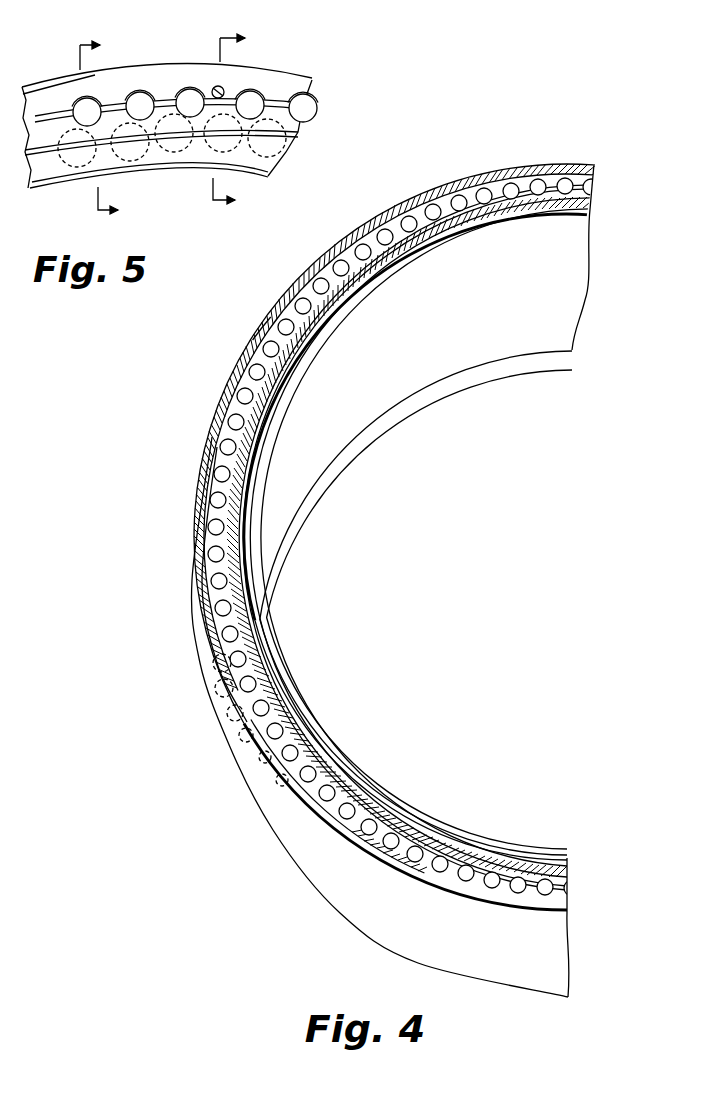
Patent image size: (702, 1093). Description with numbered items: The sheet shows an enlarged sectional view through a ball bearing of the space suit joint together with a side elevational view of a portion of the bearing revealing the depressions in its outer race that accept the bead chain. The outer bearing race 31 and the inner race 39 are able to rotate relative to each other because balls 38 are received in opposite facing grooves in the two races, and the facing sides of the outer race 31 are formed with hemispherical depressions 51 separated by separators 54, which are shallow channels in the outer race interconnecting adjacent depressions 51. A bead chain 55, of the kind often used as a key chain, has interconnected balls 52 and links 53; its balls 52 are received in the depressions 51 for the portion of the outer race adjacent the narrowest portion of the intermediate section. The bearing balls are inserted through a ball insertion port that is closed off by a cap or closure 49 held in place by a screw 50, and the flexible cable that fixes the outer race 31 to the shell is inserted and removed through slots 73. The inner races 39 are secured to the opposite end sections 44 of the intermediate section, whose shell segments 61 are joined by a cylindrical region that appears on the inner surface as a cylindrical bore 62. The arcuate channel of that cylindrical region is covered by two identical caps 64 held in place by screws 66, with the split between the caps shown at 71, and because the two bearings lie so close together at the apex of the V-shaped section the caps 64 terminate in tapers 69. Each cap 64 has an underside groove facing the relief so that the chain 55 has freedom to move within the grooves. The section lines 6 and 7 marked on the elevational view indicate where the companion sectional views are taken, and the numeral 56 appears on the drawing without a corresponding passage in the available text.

In FIG. 5, the outer bearing race 31 is at (118, 78).
In FIG. 4, the balls 38 is at (213, 665).
In FIG. 5, the balls 38 is at (232, 150).
In FIG. 5, the inner race 39 is at (60, 165).
In FIG. 4, the end sections 44 is at (360, 437).
In FIG. 5, the cap or closure 49 is at (203, 72).
In FIG. 5, the screw 50 is at (224, 88).
In FIG. 5, the hemispherical depressions 51 is at (296, 90).
In FIG. 4, the balls 52 is at (432, 222).
In FIG. 4, the links 53 is at (312, 266).
In FIG. 5, the separators 54 is at (165, 95).
In FIG. 4, the bead chain 55 is at (272, 316).
In FIG. 4, the housing ring 56 is at (340, 896).
In FIG. 4, the shell segments 61 is at (403, 372).
In FIG. 4, the cylindrical bore 62 is at (372, 258).
In FIG. 4, the caps 64 is at (352, 228).
In FIG. 4, the screws 66 is at (247, 715).
In FIG. 4, the tapers 69 is at (425, 878).
In FIG. 4, the split 71 is at (556, 182).
In FIG. 5, the slots 73 is at (54, 84).
In FIG. 5, the section line 6- 6 is at (229, 125).
In FIG. 5, the section line 7- 7 is at (99, 127).